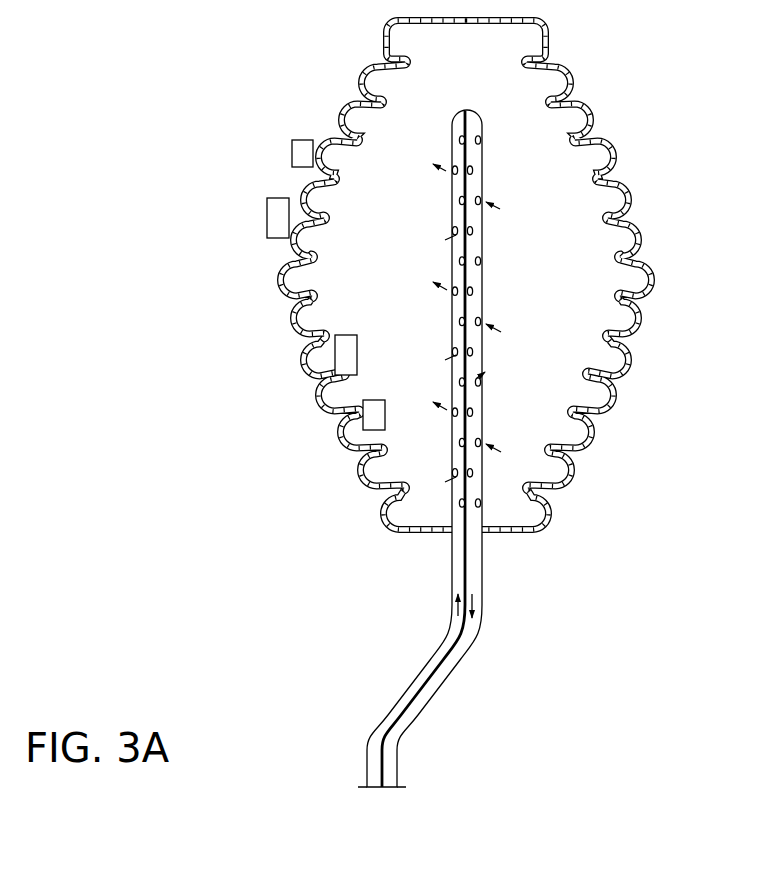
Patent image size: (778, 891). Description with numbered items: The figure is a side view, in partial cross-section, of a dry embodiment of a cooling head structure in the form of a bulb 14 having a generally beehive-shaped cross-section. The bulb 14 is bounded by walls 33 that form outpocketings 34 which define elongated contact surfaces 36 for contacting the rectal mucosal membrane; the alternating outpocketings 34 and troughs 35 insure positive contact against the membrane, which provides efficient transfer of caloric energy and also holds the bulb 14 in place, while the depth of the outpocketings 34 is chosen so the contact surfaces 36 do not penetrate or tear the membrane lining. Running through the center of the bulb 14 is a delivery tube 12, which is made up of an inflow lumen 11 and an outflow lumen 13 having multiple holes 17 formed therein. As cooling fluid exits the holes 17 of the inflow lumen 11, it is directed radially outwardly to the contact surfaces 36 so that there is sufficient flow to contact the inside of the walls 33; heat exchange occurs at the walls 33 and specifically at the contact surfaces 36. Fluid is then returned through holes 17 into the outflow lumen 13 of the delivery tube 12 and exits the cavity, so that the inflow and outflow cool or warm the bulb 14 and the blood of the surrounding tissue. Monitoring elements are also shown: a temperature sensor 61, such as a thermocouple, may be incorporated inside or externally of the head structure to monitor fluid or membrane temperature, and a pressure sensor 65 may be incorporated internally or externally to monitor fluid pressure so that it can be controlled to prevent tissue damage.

The inflow lumen 11 is at (417, 667).
The delivery tube 12 is at (364, 743).
The outflow lumen 13 is at (447, 670).
The bulb 14 is at (660, 270).
The holes 17 is at (450, 292).
The walls 33 is at (341, 107).
The outpocketings 34 is at (605, 160).
The troughs 35 is at (633, 337).
The contact surfaces 36 is at (597, 437).
The temperature sensor 61 is at (272, 217).
The pressure sensor 65 is at (305, 148).